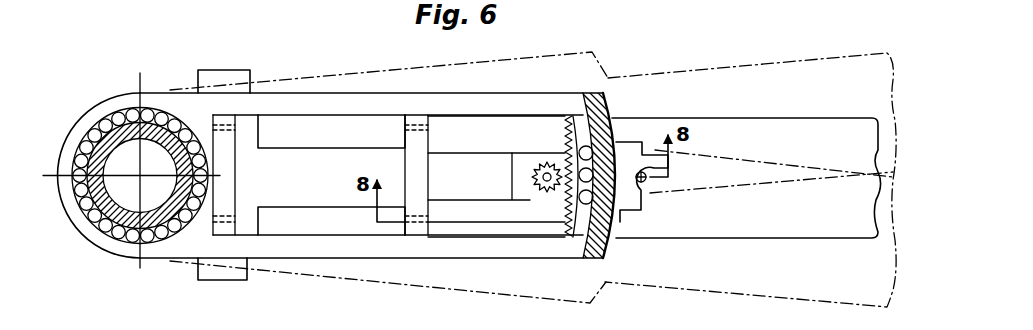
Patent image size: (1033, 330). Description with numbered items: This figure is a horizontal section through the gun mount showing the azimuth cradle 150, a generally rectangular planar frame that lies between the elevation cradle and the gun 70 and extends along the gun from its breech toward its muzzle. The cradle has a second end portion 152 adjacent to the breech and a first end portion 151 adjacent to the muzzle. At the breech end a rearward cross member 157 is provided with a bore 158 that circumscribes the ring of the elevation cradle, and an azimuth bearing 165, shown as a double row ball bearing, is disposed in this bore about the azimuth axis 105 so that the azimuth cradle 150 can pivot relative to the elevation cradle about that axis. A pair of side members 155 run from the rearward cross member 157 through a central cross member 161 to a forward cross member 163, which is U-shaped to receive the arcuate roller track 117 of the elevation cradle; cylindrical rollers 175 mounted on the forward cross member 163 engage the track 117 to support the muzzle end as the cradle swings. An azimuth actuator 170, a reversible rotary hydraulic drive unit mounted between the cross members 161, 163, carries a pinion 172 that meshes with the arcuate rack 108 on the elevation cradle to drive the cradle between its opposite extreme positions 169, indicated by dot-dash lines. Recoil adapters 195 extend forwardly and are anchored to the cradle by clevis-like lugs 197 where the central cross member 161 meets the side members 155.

The gun 70 is at (830, 117).
The azimuth axis 105 is at (60, 175).
The rack 108 is at (568, 232).
The arcuate roller track 117 is at (607, 250).
The azimuth cradle 150 is at (307, 88).
The first end portion 151 is at (642, 200).
The second end portion 152 is at (143, 264).
The side members 155 is at (407, 93).
The rearward cross member 157 is at (194, 95).
The bore 158 is at (92, 224).
The central cross member 161 is at (433, 184).
The forward cross member 163 is at (580, 128).
The azimuth bearing 165 is at (98, 116).
The extreme positions 169 is at (832, 58).
The azimuth actuator 170 is at (456, 150).
The pinion 172 is at (545, 158).
The cylindrical rollers 175 is at (612, 134).
The recoil adapters 195 is at (308, 207).
The clevis-like lugs 197 is at (412, 126).